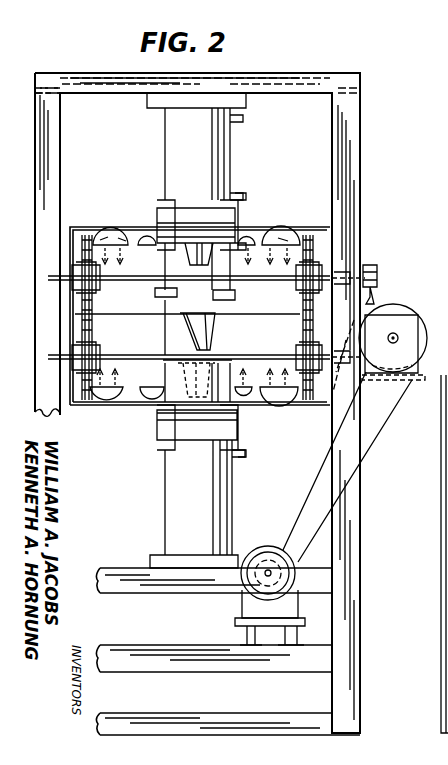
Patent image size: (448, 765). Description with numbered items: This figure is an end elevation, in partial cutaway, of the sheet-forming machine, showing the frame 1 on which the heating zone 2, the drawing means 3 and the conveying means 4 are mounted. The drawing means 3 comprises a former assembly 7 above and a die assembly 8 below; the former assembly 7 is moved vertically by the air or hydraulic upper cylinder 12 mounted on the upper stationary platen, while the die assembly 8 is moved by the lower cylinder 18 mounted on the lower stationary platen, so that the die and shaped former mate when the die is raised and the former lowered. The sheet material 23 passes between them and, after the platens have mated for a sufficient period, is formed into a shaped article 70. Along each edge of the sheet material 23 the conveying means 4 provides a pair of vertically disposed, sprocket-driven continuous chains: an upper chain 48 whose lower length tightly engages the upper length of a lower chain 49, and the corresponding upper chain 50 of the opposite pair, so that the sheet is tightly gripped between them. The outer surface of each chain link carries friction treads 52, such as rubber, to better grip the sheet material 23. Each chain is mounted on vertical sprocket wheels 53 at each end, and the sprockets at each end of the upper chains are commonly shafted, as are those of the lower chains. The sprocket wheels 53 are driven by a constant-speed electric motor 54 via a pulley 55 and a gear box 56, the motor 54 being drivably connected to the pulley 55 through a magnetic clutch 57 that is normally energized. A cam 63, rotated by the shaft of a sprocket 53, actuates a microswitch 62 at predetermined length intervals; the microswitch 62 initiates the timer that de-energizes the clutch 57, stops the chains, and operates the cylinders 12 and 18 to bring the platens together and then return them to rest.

The frame 1 is at (366, 500).
The heating zone 2 is at (98, 224).
The drawing means 3 is at (148, 210).
The conveying means 4 is at (73, 328).
The former assembly 7 is at (188, 265).
The die assembly 8 is at (183, 381).
The upper cylinder 12 is at (178, 151).
The lower cylinder 18 is at (188, 497).
The sheet material 23 is at (170, 316).
The upper chain 48 is at (305, 300).
The lower chain 49 is at (305, 333).
The upper chain 50 is at (92, 298).
The friction treads 52 is at (92, 328).
The sprocket wheels 53 is at (322, 244).
The electric motor 54 is at (278, 556).
The pulley 55 is at (374, 440).
The gear box 56 is at (393, 342).
The magnetic clutch 57 is at (238, 593).
The microswitch 62 is at (372, 304).
The cam 63 is at (378, 274).
The shaped article 70 is at (207, 330).